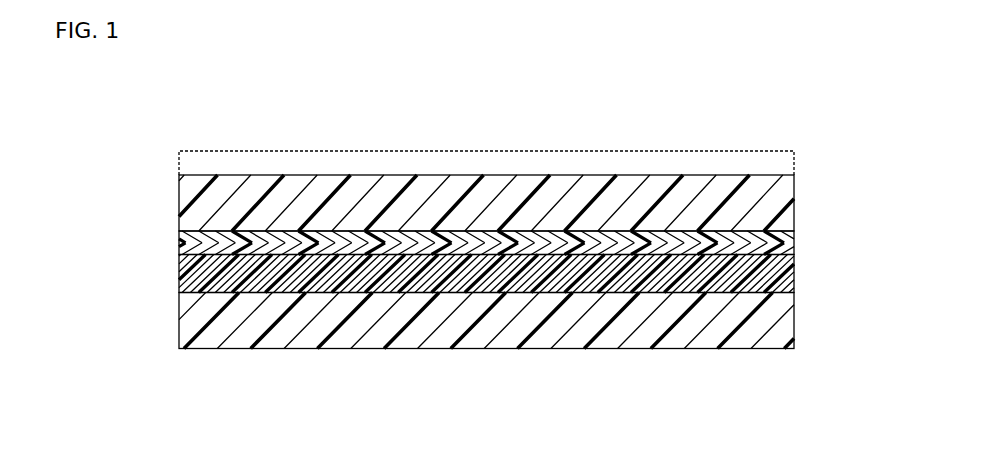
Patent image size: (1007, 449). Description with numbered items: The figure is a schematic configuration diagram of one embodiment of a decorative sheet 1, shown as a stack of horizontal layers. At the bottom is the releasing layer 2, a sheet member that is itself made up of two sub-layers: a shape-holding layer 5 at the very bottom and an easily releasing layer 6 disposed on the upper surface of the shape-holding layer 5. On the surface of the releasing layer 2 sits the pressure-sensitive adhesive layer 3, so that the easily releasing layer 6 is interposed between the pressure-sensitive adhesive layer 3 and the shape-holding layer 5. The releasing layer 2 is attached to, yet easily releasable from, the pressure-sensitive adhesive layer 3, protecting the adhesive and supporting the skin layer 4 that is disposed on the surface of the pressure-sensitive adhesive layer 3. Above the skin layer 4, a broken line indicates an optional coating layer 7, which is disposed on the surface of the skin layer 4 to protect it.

The decorative sheet 1 is at (548, 281).
The releasing layer 2 is at (548, 311).
The pressure-sensitive adhesive layer 3 is at (794, 242).
The skin layer 4 is at (794, 193).
The shape-holding layer 5 is at (794, 318).
The easily releasing layer 6 is at (794, 263).
The coating layer 7 is at (795, 163).